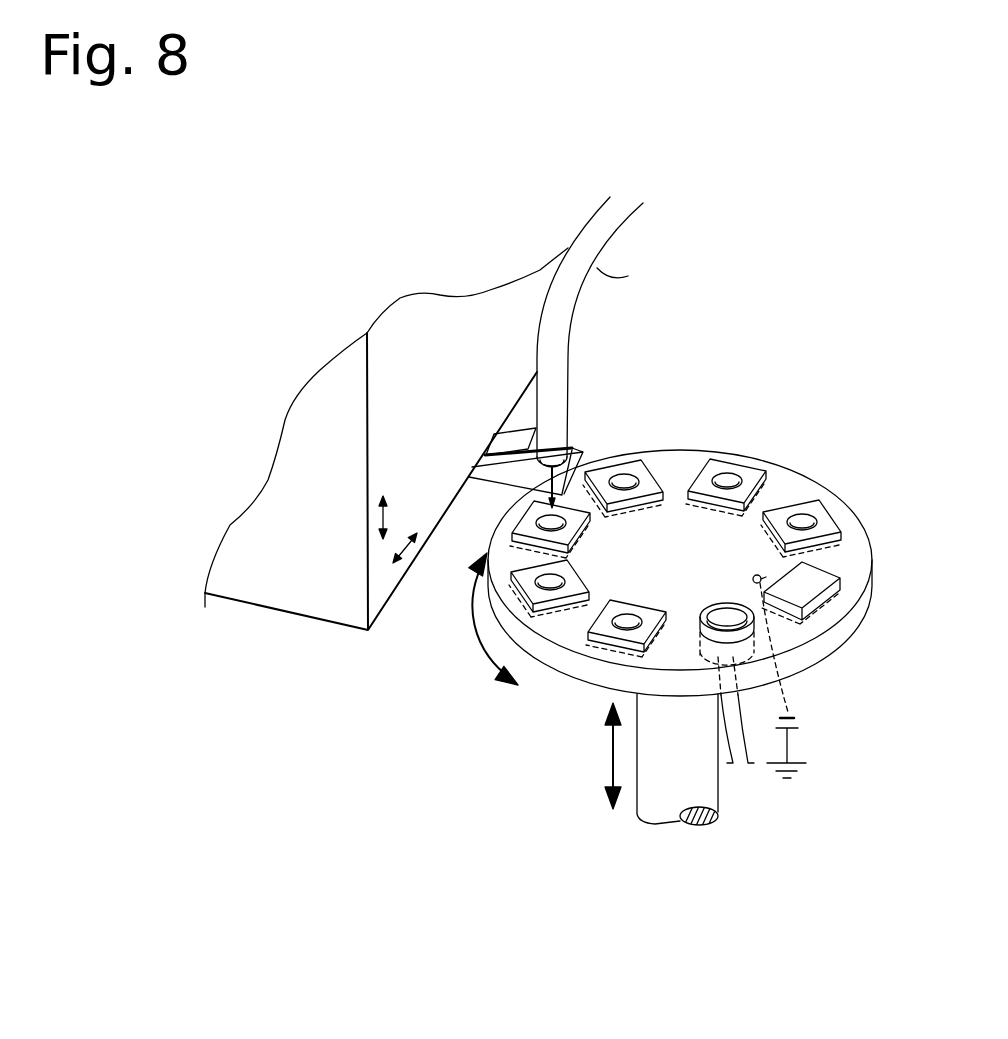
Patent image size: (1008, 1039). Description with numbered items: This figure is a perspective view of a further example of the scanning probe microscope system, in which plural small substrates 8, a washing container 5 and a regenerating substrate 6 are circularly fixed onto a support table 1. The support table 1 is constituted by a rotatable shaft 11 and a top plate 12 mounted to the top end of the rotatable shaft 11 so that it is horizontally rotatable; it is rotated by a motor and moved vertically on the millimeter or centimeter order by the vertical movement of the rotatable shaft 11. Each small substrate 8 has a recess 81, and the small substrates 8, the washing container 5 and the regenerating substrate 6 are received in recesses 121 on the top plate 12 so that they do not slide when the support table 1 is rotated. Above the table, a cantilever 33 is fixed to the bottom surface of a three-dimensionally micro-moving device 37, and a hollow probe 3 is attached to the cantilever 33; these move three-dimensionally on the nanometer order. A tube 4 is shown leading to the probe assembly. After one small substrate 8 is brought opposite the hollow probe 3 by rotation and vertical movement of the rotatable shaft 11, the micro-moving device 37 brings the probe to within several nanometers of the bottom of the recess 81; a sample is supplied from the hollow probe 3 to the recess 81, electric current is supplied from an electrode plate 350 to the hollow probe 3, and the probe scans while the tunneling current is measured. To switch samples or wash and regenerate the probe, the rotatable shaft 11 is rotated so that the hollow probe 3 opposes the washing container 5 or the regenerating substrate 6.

The support table 1 is at (654, 641).
The hollow probe 3 is at (541, 506).
The tube 4 is at (590, 222).
The washing container 5 is at (730, 603).
The regenerating substrate 6 is at (818, 578).
The small substrate 8 is at (538, 497).
The rotatable shaft 11 is at (658, 812).
The top plate 12 is at (558, 663).
The cantilever 33 is at (573, 450).
The three-dimensionally micro-moving device 37 is at (378, 607).
The recess 81 is at (480, 597).
The recess 121 is at (579, 538).
The electrode plate 350 is at (515, 447).